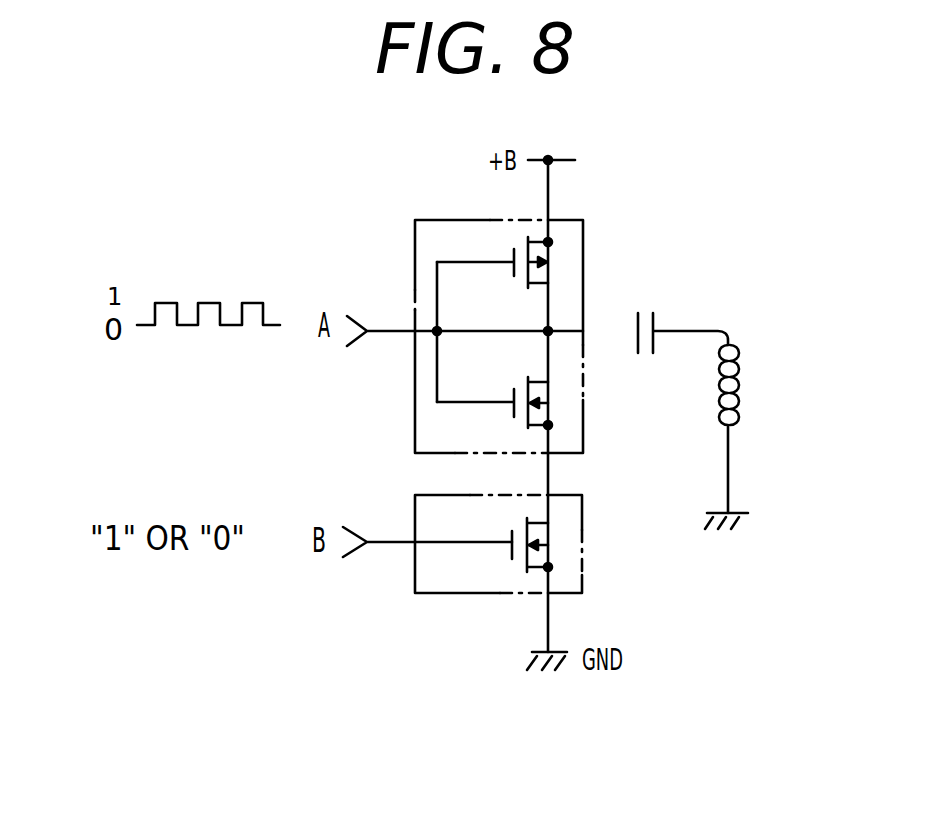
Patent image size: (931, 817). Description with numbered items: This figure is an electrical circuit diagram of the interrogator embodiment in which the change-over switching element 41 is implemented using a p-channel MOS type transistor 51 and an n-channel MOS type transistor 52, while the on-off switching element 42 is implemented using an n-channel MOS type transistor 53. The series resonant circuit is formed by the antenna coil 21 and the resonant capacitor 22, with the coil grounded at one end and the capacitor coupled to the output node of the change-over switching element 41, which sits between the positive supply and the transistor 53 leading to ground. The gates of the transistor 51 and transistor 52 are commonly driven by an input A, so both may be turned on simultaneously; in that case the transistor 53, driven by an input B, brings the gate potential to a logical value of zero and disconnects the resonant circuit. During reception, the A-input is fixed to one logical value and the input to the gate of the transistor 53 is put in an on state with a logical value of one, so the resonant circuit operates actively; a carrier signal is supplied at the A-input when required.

The antenna coil 21 is at (738, 381).
The resonant capacitor 22 is at (655, 326).
The change-over switching element 41 is at (578, 244).
The on-off switching element 42 is at (573, 575).
The p-channel MOS type transistor 51 is at (513, 250).
The n-channel MOS type transistor 52 is at (510, 395).
The n-channel MOS type transistor 53 is at (508, 554).